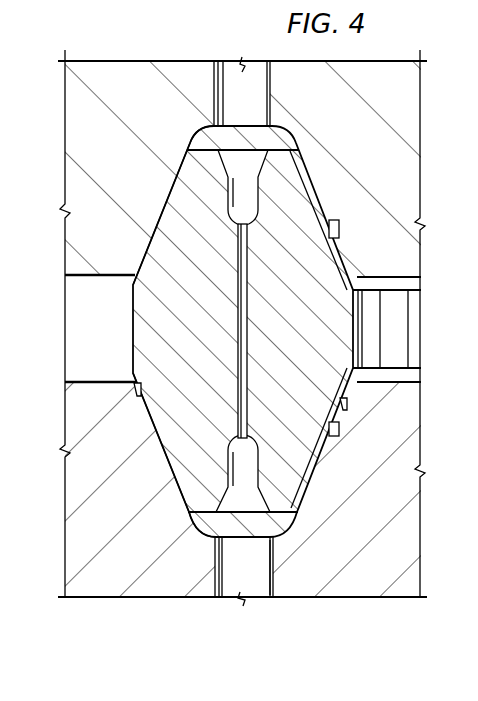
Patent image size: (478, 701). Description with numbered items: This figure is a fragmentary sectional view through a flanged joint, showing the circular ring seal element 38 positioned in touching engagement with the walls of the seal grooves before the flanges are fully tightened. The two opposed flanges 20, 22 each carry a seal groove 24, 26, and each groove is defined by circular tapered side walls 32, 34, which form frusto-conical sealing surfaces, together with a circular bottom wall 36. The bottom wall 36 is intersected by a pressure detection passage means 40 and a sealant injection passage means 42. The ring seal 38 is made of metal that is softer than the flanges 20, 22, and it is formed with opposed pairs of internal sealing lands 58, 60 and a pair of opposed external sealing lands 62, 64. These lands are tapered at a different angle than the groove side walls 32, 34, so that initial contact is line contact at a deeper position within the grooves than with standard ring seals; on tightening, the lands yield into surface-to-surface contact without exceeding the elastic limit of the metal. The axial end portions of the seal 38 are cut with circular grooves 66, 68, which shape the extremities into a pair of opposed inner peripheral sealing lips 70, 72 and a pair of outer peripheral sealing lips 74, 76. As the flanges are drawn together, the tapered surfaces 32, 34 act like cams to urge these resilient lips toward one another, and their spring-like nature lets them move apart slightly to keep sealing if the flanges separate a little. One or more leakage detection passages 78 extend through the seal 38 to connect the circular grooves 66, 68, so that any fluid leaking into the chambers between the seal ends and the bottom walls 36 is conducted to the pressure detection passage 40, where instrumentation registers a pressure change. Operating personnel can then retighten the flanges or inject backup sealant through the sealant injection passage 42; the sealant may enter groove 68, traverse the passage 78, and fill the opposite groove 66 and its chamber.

The flange 20 is at (93, 138).
The flange 22 is at (88, 510).
The seal groove 24 is at (203, 125).
The seal groove 26 is at (203, 520).
The tapered side wall 32 is at (138, 395).
The tapered side wall 34 is at (345, 403).
The bottom wall 36 is at (283, 528).
The circular ring seal element 38 is at (163, 338).
The pressure detection passage means 40 is at (257, 70).
The sealant injection passage means 42 is at (255, 578).
The internal sealing land 58 is at (333, 222).
The internal sealing land 60 is at (333, 448).
The external sealing land 62 is at (155, 212).
The external sealing land 64 is at (158, 432).
The circular groove 66 is at (240, 192).
The circular groove 68 is at (243, 460).
The inner peripheral sealing lip 70 is at (288, 192).
The inner peripheral sealing lip 72 is at (308, 497).
The outer peripheral sealing lip 74 is at (188, 170).
The outer peripheral sealing lip 76 is at (193, 490).
The leakage detection passage 78 is at (247, 297).